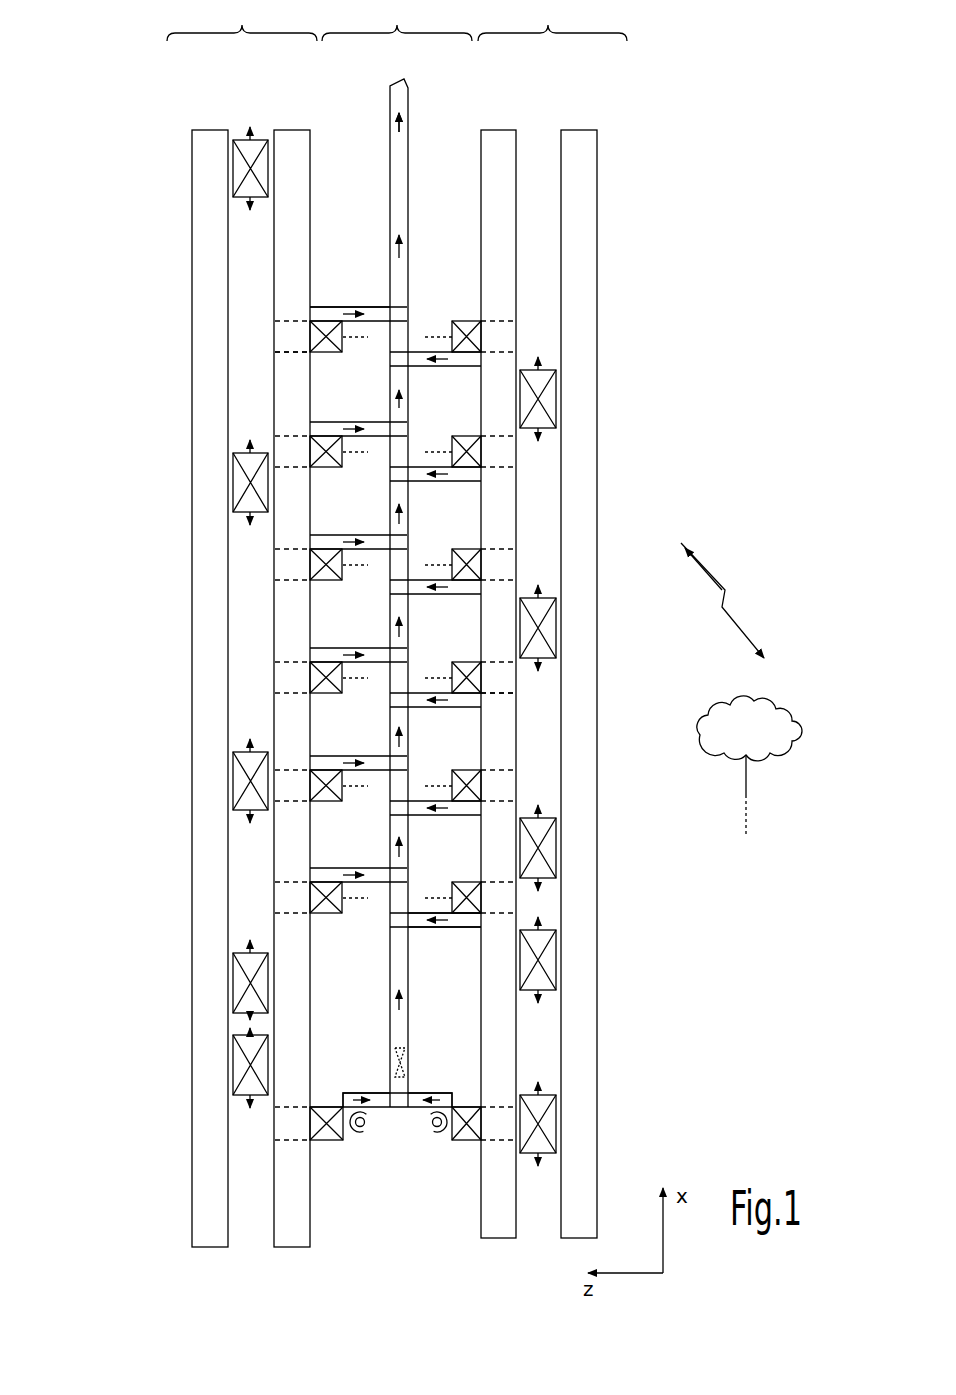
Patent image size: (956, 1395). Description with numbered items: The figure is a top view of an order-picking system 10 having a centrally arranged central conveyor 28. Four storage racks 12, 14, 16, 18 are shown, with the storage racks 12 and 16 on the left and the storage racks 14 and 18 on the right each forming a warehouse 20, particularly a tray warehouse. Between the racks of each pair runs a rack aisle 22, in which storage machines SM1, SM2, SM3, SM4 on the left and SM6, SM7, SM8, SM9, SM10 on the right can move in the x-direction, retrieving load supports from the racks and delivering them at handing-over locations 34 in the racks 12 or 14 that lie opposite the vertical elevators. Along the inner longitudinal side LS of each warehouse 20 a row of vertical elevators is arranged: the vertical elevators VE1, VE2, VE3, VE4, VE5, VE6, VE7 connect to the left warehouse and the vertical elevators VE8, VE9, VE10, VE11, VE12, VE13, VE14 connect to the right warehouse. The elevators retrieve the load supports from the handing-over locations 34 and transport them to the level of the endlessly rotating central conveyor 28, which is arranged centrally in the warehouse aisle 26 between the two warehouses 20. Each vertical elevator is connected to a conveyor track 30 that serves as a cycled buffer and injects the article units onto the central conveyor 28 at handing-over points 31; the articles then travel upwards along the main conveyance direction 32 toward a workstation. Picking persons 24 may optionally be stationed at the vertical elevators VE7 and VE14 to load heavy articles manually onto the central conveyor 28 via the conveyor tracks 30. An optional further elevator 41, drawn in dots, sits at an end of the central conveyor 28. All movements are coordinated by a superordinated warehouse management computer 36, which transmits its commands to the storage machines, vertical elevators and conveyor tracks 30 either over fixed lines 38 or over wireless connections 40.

The order-picking system 10 is at (668, 285).
The storage rack 12 is at (292, 130).
The storage rack 14 is at (497, 130).
The storage rack 16 is at (207, 130).
The storage rack 18 is at (580, 130).
The warehouse 20 is at (397, 21).
The rack aisle 22 is at (253, 1250).
The picking persons 24 is at (428, 1150).
The warehouse aisle 26 is at (397, 21).
The central conveyor 28 is at (390, 113).
The conveyor track 30 is at (355, 306).
The handing-over point 31 is at (401, 316).
The main conveyance direction 32 is at (401, 122).
The handing-over location 34 is at (297, 354).
The warehouse management computer 36 is at (766, 739).
The fixed lines 38 is at (748, 785).
The wireless connections 40 is at (734, 600).
The another elevator 41 is at (412, 1060).
The storage machine SM1 is at (233, 170).
The storage machine SM2 is at (233, 490).
The storage machine SM3 is at (233, 786).
The storage machine SM4 is at (233, 990).
The storage machine SM6 is at (557, 395).
The storage machine SM7 is at (557, 630).
The storage machine SM8 is at (557, 848).
The storage machine SM9 is at (556, 963).
The storage machine SM10 is at (556, 1123).
The vertical elevator VE1 is at (325, 355).
The vertical elevator VE2 is at (328, 470).
The vertical elevator VE3 is at (331, 583).
The vertical elevator VE4 is at (332, 696).
The vertical elevator VE5 is at (332, 804).
The vertical elevator VE6 is at (332, 916).
The vertical elevator VE7 is at (328, 1142).
The vertical elevator VE8 is at (467, 320).
The vertical elevator VE9 is at (468, 436).
The vertical elevator VE10 is at (468, 549).
The vertical elevator VE11 is at (468, 662).
The vertical elevator VE12 is at (468, 770).
The vertical elevator VE13 is at (468, 882).
The vertical elevator VE14 is at (466, 1142).
The longitudinal side LS is at (316, 1217).